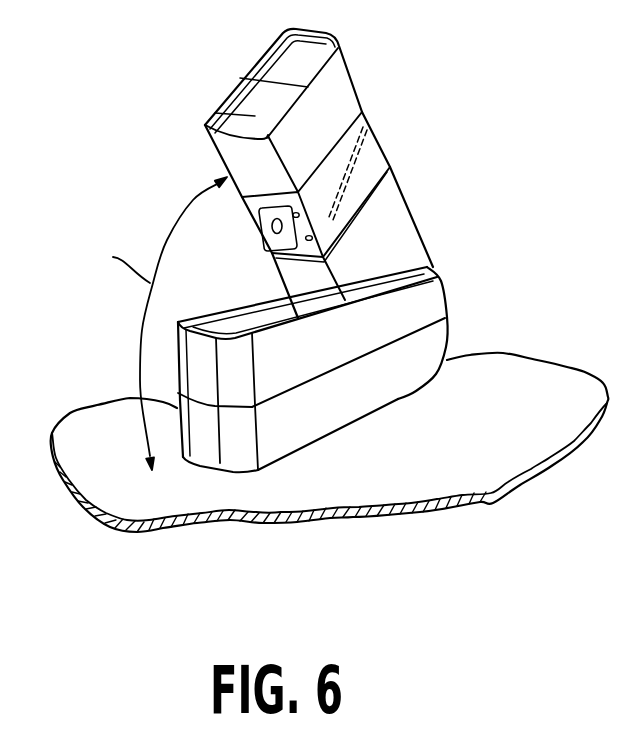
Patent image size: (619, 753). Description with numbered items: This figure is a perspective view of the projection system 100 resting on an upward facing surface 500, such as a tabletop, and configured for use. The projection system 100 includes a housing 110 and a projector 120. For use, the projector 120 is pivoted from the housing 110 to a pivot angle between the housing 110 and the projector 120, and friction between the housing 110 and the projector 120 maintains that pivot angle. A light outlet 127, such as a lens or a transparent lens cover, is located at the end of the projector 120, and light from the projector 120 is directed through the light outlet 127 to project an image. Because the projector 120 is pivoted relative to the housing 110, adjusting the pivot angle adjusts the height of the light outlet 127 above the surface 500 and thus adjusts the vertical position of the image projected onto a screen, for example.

The projection system 100 is at (478, 142).
The housing 110 is at (437, 299).
The projector 120 is at (352, 82).
The light outlet 127 is at (250, 80).
The surface 500 is at (566, 383).